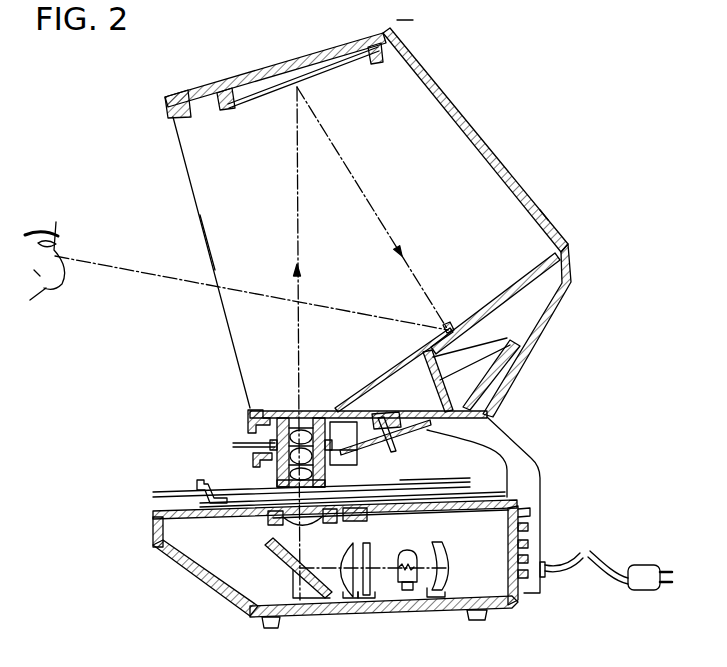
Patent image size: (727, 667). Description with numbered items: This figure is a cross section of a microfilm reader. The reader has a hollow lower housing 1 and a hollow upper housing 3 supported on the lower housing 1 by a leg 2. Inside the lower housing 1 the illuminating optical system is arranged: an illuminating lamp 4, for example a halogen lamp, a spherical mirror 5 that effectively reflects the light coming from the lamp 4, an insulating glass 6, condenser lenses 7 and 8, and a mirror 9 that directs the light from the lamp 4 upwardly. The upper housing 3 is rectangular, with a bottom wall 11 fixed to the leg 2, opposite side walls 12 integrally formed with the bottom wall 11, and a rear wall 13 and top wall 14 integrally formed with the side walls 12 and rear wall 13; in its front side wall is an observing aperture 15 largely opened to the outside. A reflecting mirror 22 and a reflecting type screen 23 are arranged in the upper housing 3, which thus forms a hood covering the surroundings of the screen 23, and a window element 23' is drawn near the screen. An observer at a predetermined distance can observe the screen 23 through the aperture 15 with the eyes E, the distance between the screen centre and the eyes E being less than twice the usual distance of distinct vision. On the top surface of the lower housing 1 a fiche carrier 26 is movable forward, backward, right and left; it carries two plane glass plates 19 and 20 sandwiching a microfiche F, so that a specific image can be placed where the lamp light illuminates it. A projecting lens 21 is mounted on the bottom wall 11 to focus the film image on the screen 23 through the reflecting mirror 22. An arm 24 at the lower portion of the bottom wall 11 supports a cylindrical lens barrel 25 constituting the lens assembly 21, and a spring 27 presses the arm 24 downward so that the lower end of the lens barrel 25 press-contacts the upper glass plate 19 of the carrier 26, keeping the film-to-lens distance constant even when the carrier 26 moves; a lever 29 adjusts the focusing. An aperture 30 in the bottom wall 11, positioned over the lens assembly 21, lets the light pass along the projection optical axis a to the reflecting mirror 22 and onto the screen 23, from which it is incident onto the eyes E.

The lower housing 1 is at (220, 576).
The leg 2 is at (507, 450).
The upper housing 3 is at (517, 180).
The illuminating lamp 4 is at (405, 590).
The spherical mirror 5 is at (428, 548).
The insulating glass 6 is at (368, 597).
The condenser lens 7 is at (341, 592).
The condenser lens 8 is at (310, 523).
The mirror 9 is at (310, 590).
The bottom wall 11 is at (416, 410).
The side walls 12 is at (198, 179).
The rear wall 13 is at (477, 138).
The top wall 14 is at (251, 74).
The observing aperture 15 is at (207, 243).
The upper glass plate 19 is at (483, 483).
The lower glass plate 20 is at (478, 490).
The projecting lens 21 is at (266, 478).
The reflecting mirror 22 is at (344, 60).
The reflecting type screen 23 is at (491, 322).
The window plate 23' is at (385, 367).
The arm 24 is at (385, 437).
The lens barrel 25 is at (330, 487).
The fiche carrier 26 is at (200, 485).
The spring 27 is at (395, 413).
The lever 29 is at (245, 440).
The aperture 30 is at (295, 412).
The eyes E is at (58, 255).
The projection optical axis a is at (360, 187).
The microfiche F is at (448, 493).